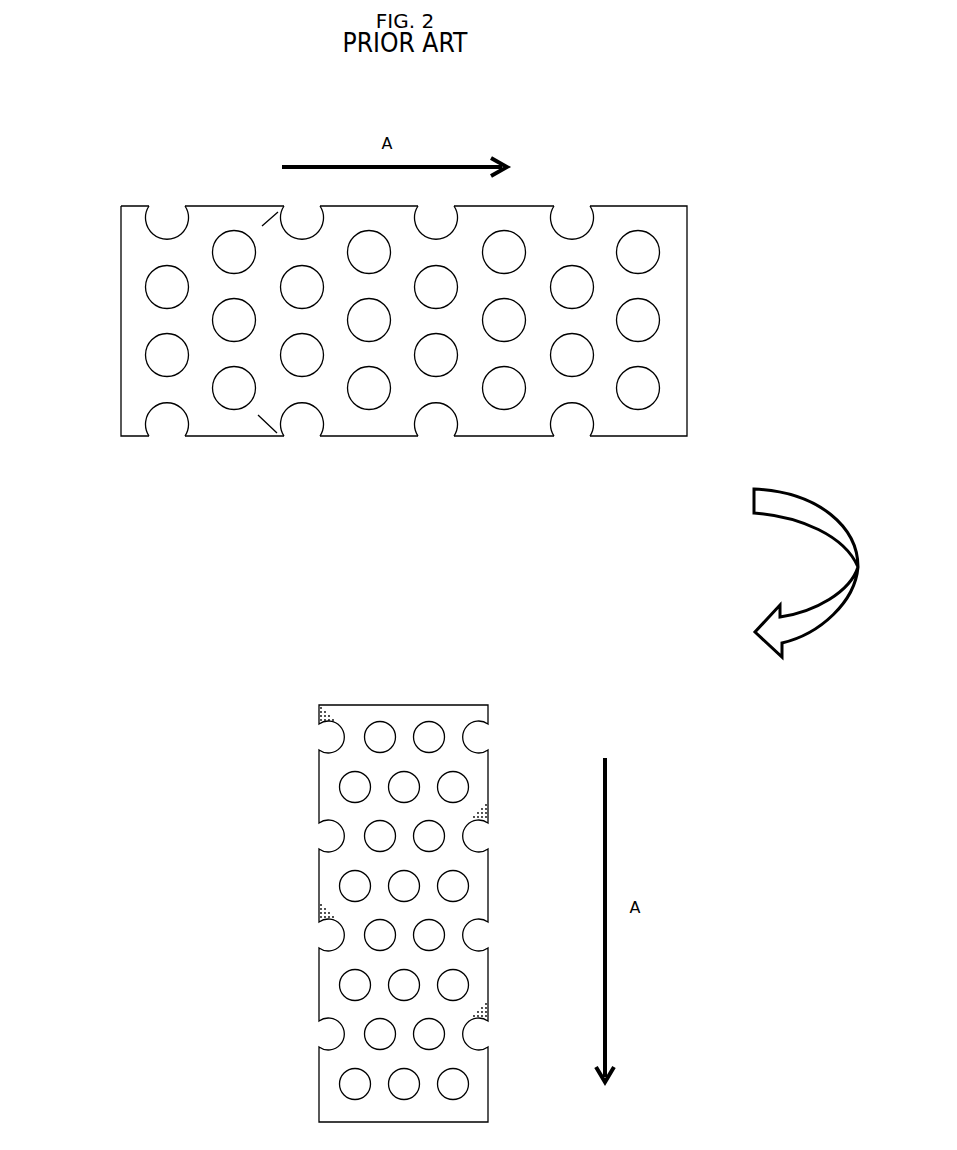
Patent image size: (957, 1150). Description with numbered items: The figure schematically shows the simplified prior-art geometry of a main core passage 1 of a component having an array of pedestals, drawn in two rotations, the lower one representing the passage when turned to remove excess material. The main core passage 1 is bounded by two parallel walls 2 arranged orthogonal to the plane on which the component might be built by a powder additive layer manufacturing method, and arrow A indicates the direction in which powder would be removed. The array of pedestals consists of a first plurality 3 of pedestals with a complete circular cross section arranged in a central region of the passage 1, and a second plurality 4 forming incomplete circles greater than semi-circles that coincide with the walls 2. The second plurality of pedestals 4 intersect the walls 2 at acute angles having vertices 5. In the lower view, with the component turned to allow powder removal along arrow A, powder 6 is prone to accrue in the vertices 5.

The main core passage 1 is at (418, 598).
The walls 2 is at (230, 205).
The first plurality of pedestals 3 is at (575, 292).
The second plurality of pedestals 4 is at (163, 222).
The vertices 5 is at (488, 1007).
The powder 6 is at (328, 717).